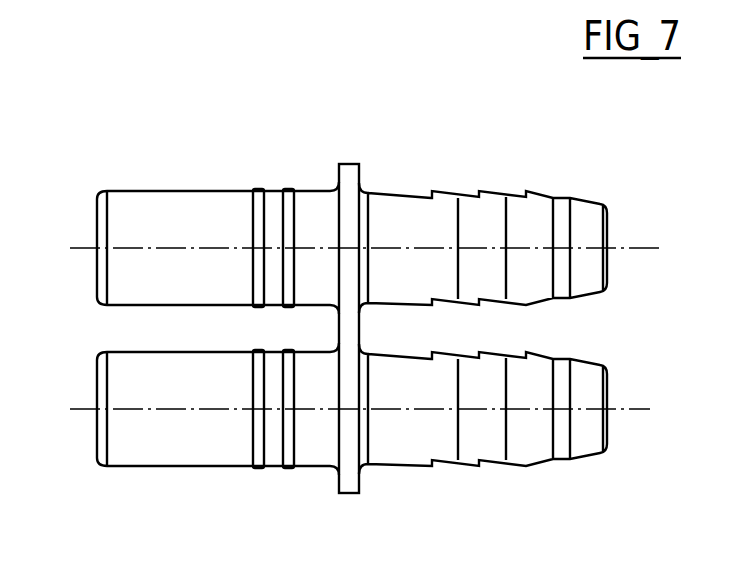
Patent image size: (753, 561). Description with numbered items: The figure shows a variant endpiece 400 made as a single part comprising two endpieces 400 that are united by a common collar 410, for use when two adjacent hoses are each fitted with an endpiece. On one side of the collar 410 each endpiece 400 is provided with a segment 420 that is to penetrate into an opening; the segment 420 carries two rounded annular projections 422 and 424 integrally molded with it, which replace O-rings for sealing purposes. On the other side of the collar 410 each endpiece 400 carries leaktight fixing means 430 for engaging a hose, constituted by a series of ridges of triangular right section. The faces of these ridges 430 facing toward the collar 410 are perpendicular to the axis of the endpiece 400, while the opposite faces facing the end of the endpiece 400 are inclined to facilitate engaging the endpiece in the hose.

The endpiece 400 is at (114, 177).
The collar 410 is at (350, 170).
The segment 420 is at (145, 163).
The rounded annular projection 422 is at (256, 187).
The rounded annular projection 424 is at (293, 187).
The leaktight fixing means 430 is at (513, 178).